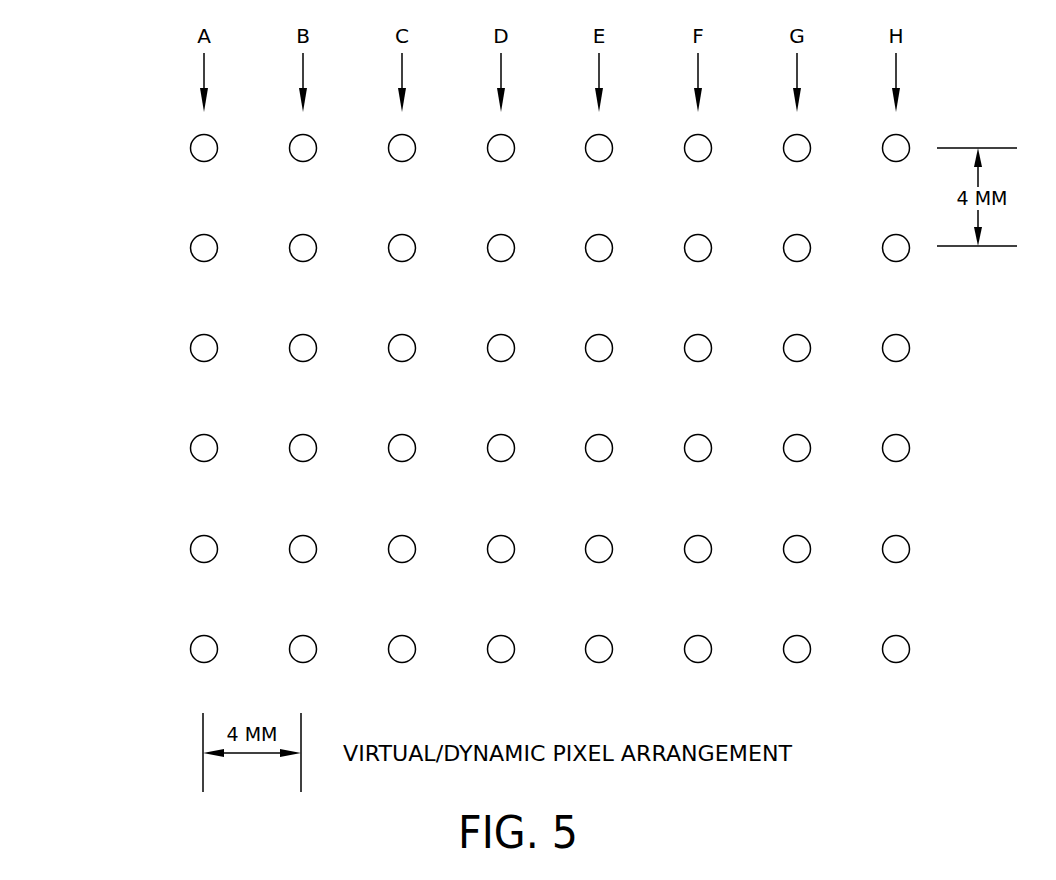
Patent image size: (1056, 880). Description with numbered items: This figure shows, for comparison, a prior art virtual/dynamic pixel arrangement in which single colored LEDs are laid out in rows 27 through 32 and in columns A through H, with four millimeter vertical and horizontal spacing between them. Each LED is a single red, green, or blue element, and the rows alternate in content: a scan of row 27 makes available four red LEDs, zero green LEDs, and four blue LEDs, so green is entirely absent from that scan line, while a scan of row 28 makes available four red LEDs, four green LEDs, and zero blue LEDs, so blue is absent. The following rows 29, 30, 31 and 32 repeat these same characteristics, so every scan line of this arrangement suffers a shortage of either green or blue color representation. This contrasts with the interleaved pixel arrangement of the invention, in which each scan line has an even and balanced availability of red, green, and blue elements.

The row 27 is at (132, 148).
The row 28 is at (132, 248).
The row 29 is at (132, 348).
The row 30 is at (132, 448).
The row 31 is at (132, 549).
The row 32 is at (132, 649).